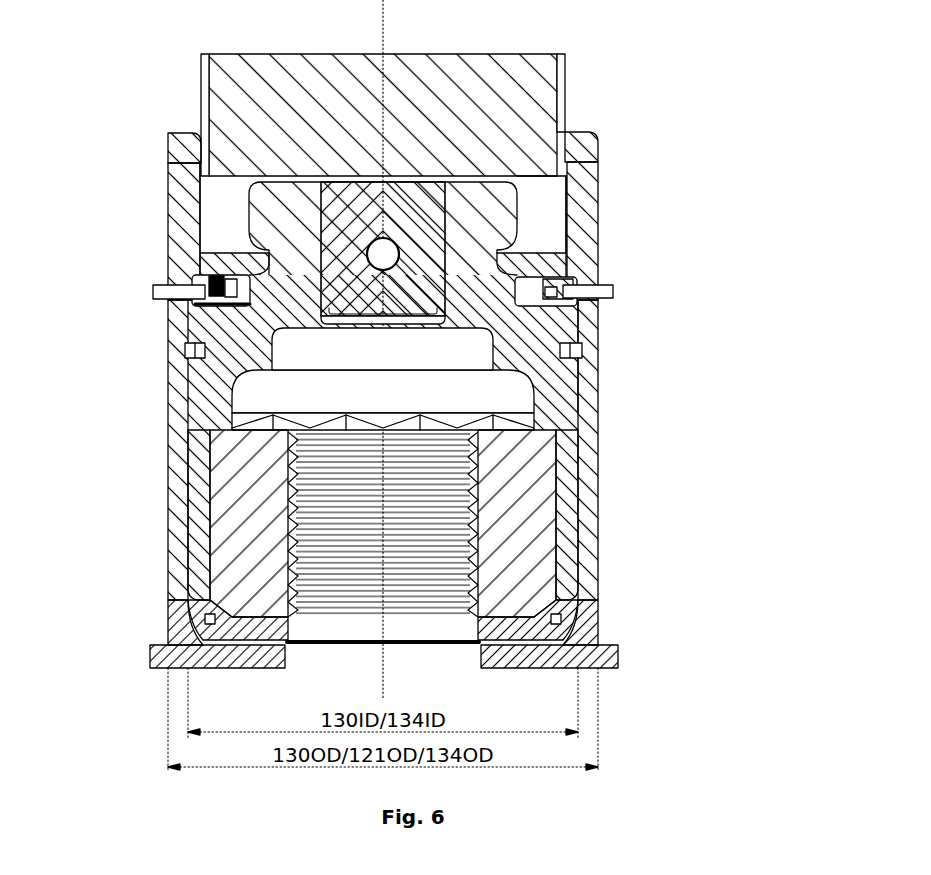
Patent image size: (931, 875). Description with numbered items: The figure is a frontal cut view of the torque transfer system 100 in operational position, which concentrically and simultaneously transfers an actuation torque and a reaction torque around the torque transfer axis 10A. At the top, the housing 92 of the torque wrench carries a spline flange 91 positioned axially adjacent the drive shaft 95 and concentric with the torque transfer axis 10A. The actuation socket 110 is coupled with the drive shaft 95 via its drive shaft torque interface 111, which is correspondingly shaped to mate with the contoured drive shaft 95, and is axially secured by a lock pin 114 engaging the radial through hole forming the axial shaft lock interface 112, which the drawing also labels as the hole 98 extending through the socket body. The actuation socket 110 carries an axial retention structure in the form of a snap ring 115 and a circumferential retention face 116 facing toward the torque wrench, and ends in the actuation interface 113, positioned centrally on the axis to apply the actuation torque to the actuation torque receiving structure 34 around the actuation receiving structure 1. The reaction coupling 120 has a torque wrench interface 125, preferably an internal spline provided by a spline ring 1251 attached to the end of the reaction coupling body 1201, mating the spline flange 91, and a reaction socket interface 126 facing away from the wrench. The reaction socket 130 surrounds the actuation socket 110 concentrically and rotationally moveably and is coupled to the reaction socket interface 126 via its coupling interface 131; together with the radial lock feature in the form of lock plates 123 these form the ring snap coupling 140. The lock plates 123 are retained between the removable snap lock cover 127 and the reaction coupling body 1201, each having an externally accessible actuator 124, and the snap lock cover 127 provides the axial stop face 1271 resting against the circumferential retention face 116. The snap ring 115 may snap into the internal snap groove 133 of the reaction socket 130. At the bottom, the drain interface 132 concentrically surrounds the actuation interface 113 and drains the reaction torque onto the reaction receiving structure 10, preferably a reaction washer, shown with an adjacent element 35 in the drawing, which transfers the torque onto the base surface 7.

The reaction receiving structure 10 is at (678, 43).
The torque transfer axis 10A is at (388, 33).
The housing 92 is at (268, 54).
The spline flange 91 is at (201, 75).
The drive shaft 95 is at (196, 162).
The torque wrench interface 125 is at (629, 120).
The spline ring 1251 is at (588, 152).
The reaction coupling 120 is at (648, 172).
The reaction coupling body 1201 is at (592, 219).
The lock pin 114 is at (345, 202).
The passage 98 is at (248, 249).
The axial shaft lock interface 112 is at (370, 247).
The drive shaft torque interface 111 is at (305, 322).
The snap ring 115 is at (318, 315).
The circumferential retention face 116 is at (208, 288).
The snap lock cover 127 is at (577, 253).
The lock plate 123 is at (600, 273).
The ring snap coupling 140 is at (670, 277).
The reaction socket interface 126 is at (610, 302).
The coupling interface 131 is at (551, 292).
The externally accessible actuator 124 is at (620, 315).
The axial stop face 1271 is at (585, 350).
The torque transfer system 100 is at (758, 378).
The snap groove 133 is at (600, 372).
The actuation interface 113 is at (228, 426).
The actuation socket 110 is at (540, 421).
The actuation receiving structure 1 is at (505, 500).
The actuation torque receiving structure 34 is at (207, 532).
The reaction socket 130 is at (592, 511).
The drain interface 132 is at (575, 636).
The gasket 35 is at (210, 631).
The base surface 7 is at (152, 645).